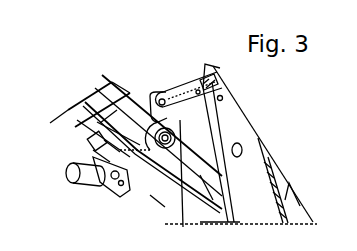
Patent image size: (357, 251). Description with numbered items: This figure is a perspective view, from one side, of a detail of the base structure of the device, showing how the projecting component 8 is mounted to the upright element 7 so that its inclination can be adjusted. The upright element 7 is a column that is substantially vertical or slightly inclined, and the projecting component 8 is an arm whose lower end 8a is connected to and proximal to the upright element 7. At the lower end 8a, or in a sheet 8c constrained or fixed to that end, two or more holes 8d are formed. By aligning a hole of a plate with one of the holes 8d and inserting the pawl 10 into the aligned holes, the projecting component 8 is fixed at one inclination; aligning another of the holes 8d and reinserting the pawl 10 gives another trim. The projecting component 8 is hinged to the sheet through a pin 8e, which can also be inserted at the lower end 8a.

The upright element 7 is at (250, 168).
The projecting component 8 is at (116, 98).
The lower end 8a is at (150, 93).
The sheet 8c is at (108, 161).
The holes 8d is at (117, 182).
The pin 8e is at (153, 175).
The pawl 10 is at (98, 183).